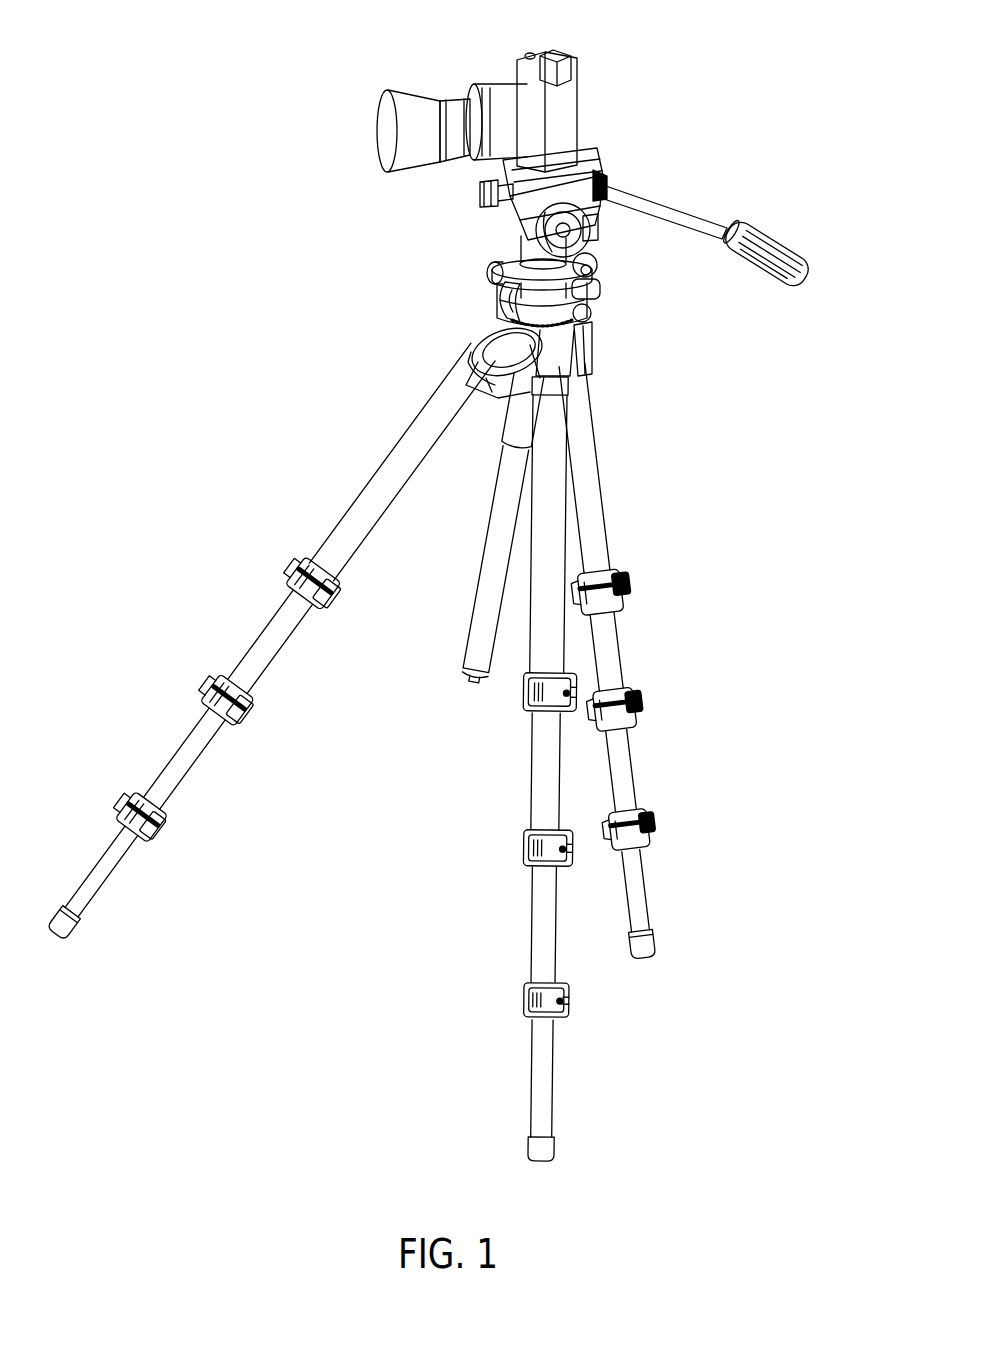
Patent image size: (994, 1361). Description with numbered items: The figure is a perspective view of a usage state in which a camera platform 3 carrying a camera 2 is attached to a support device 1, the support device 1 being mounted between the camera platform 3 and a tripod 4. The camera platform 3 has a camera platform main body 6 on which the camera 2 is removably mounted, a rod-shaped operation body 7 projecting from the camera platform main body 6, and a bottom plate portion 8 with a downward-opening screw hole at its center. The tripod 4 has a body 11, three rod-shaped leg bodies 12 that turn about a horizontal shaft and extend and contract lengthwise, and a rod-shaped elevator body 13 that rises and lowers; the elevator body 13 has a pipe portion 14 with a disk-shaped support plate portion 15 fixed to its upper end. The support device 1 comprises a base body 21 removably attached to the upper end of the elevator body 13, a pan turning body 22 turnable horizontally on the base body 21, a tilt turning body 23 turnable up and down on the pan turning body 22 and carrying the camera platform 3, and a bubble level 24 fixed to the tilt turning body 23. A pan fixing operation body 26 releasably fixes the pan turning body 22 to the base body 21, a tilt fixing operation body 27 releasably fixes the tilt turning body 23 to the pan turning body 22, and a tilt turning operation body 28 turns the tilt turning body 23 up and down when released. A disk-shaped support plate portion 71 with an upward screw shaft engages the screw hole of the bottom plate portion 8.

The support device 1 is at (606, 302).
The camera 2 is at (581, 52).
The camera platform 3 is at (646, 205).
The tripod 4 is at (352, 747).
The camera platform main body 6 is at (597, 207).
The rod-shaped operation body 7 is at (714, 231).
The bottom plate portion 8 is at (520, 262).
The body 11 is at (506, 362).
The leg bodies 12 is at (390, 459).
The elevator body 13 is at (488, 548).
The pipe portion 14 is at (513, 476).
The support plate portion 15 is at (478, 340).
The base body 21 is at (589, 349).
The pan turning body 22 is at (484, 270).
The tilt turning body 23 is at (620, 256).
The bubble level 24 is at (496, 262).
The pan fixing operation body 26 is at (590, 319).
The tilt fixing operation body 27 is at (500, 304).
The tilt turning operation body 28 is at (608, 287).
The support plate portion 71 is at (593, 269).